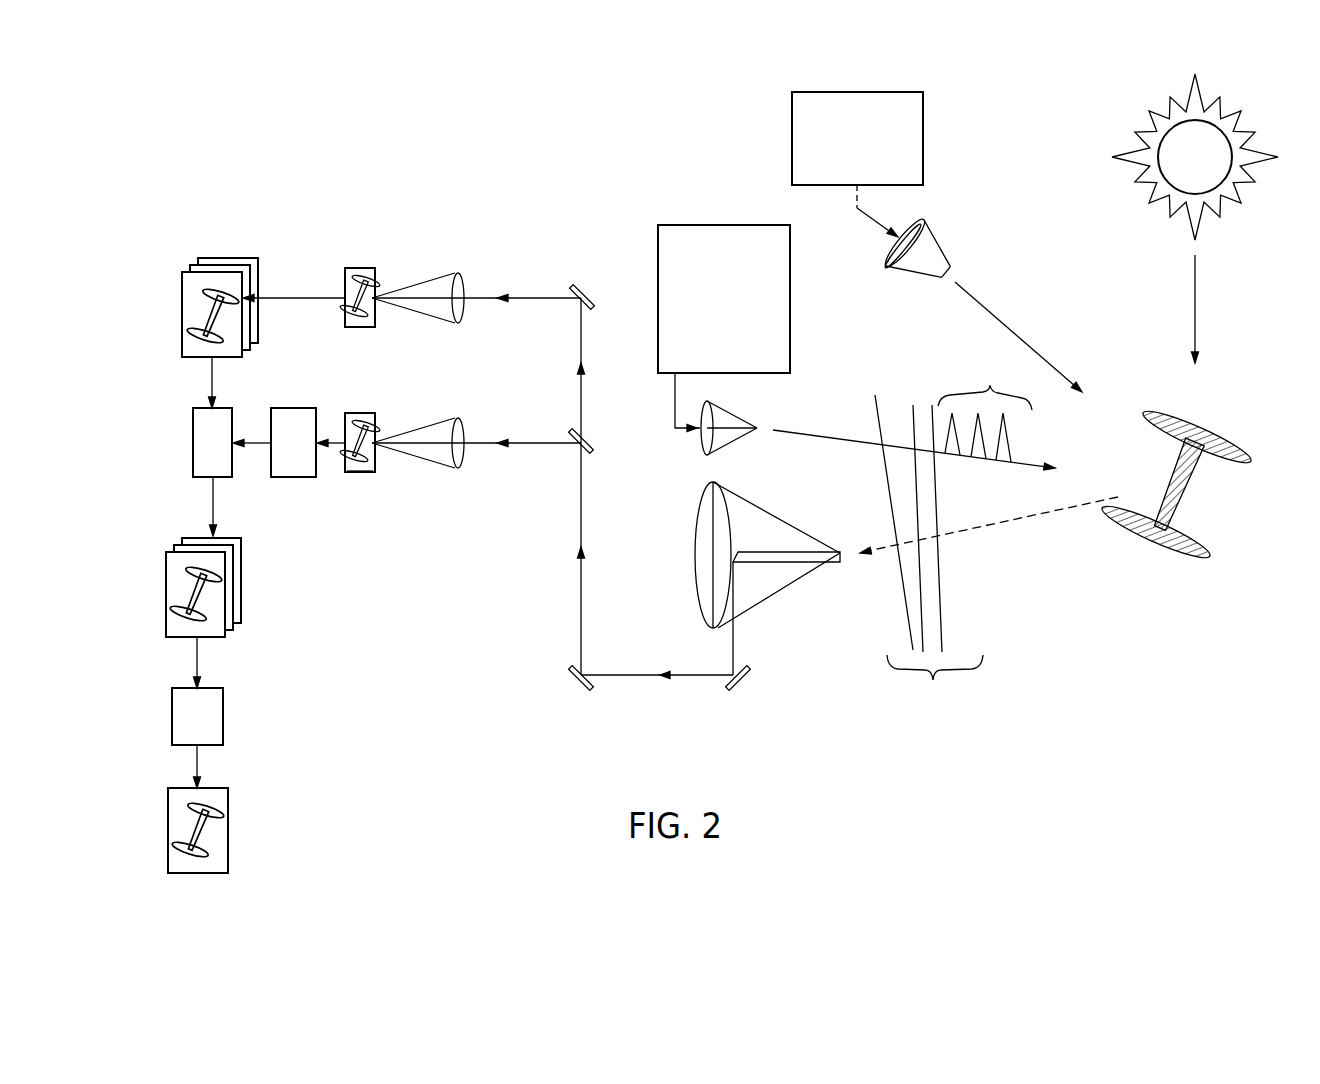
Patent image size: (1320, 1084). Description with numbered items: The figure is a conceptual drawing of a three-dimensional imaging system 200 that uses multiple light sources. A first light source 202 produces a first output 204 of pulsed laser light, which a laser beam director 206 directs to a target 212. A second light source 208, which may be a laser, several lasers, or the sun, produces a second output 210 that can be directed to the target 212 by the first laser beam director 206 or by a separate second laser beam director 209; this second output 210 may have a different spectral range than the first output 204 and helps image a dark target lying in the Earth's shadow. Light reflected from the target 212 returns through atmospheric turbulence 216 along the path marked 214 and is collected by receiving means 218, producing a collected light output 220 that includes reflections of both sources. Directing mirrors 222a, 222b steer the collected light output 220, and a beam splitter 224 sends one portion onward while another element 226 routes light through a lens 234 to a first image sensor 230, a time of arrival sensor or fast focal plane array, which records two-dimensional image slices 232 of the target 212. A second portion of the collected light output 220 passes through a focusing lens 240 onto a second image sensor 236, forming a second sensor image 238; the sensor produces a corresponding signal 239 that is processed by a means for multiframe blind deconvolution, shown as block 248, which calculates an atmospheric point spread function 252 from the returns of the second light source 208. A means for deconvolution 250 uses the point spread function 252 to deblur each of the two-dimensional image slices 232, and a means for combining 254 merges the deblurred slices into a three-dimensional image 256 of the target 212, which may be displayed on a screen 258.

The three-dimensional imaging system 200 is at (643, 133).
The first light source 202 is at (724, 225).
The first output 204 is at (675, 403).
The laser beam director 206 is at (738, 410).
The second light source 208 is at (924, 137).
The second laser beam director 209 is at (933, 243).
The second output 210 is at (868, 224).
The target 212 is at (1185, 494).
The reflected light 214 is at (1018, 520).
The atmospheric turbulence 216 is at (929, 553).
The receiving means 218 is at (693, 558).
The collected light output 220 is at (735, 638).
The directing mirror 222a is at (748, 683).
The directing mirror 222b is at (570, 682).
The beam splitter 224 is at (591, 438).
The beam splitter 226 is at (584, 288).
The first image sensor 230 is at (345, 280).
The two-dimensional image slices 232 is at (360, 268).
The imaging lens 234 is at (460, 272).
The second image sensor 236 is at (368, 472).
The second sensor image 238 is at (365, 413).
The signal 239 is at (345, 440).
The focusing lens 240 is at (460, 418).
The multi-frame blind deconvolution processor 248 is at (297, 408).
The means for deconvolution 250 is at (193, 422).
The atmospheric point spread function 252 is at (252, 437).
The means for combining 254 is at (223, 718).
The three-dimensional image 256 is at (208, 834).
The screen 258 is at (229, 810).